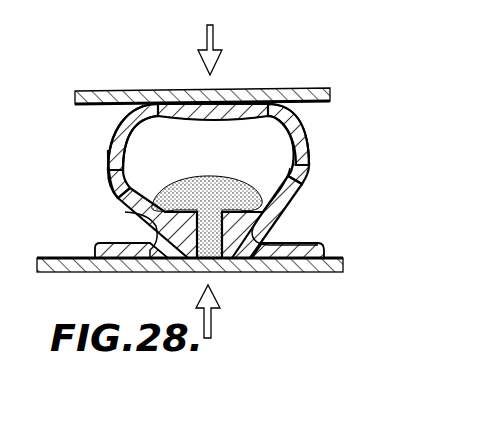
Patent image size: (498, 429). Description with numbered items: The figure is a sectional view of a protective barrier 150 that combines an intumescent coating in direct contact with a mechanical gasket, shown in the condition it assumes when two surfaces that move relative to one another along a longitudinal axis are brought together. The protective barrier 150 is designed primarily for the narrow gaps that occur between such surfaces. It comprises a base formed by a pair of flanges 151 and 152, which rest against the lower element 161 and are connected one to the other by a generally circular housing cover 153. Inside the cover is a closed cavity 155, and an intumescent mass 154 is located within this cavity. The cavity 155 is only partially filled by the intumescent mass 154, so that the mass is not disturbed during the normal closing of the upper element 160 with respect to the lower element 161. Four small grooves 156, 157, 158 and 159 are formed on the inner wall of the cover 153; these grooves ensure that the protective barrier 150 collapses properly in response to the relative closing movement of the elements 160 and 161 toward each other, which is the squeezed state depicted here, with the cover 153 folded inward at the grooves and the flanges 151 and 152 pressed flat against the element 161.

The protective barrier 150 is at (318, 162).
The flange 151 is at (312, 247).
The flange 152 is at (100, 242).
The housing cover 153 is at (108, 155).
The intumescent mass 154 is at (175, 186).
The closed cavity 155 is at (250, 160).
The groove 156 is at (143, 110).
The groove 157 is at (285, 111).
The groove 158 is at (270, 205).
The groove 159 is at (125, 212).
The element 160 is at (253, 90).
The element 161 is at (271, 268).